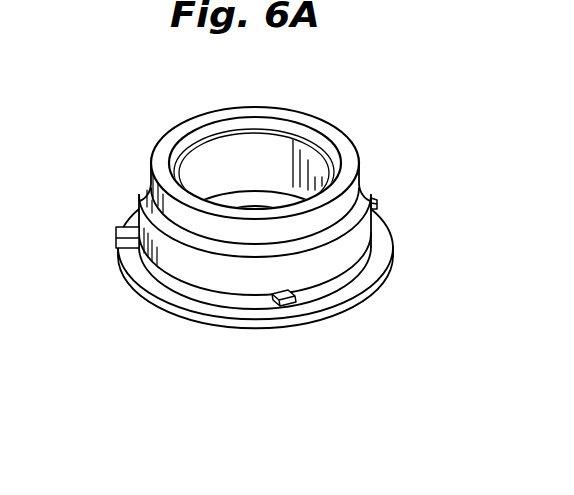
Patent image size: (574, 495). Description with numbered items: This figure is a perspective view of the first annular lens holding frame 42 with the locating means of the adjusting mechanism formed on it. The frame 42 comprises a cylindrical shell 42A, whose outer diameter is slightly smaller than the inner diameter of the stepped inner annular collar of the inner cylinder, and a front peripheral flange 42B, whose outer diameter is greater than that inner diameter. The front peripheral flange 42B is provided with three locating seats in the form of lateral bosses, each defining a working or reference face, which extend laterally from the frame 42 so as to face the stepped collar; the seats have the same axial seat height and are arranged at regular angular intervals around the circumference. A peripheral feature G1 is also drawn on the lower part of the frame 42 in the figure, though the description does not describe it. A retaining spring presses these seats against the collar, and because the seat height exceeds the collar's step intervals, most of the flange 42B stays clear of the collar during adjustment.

The first annular lens holding frame 42 is at (160, 130).
The cylindrical shell 42A is at (359, 173).
The front peripheral flange 42B is at (371, 266).
The groove G1 is at (237, 329).